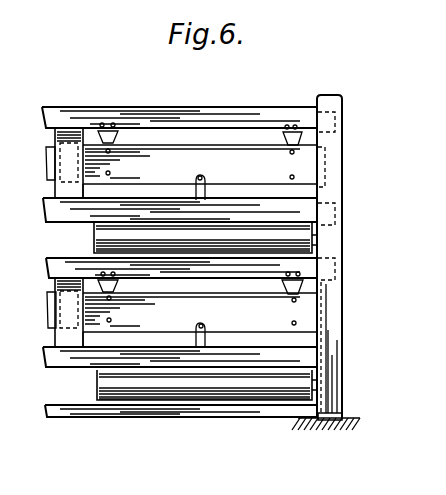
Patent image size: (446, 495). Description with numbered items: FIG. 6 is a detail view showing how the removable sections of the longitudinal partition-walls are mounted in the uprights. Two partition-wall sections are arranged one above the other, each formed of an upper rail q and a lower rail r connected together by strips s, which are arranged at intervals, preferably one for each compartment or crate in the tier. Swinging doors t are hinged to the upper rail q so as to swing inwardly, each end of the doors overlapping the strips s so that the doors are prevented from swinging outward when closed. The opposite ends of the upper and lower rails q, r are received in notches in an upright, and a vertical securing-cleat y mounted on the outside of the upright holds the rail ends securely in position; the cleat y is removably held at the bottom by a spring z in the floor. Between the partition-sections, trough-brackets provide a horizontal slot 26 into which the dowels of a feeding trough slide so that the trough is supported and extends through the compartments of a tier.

The upper rail q is at (262, 112).
The strips s is at (72, 147).
The swinging doors t is at (302, 165).
The lower rail r is at (280, 213).
The vertical securing-cleats y is at (342, 247).
The horizontal slot 26 is at (94, 235).
The spring z is at (340, 413).